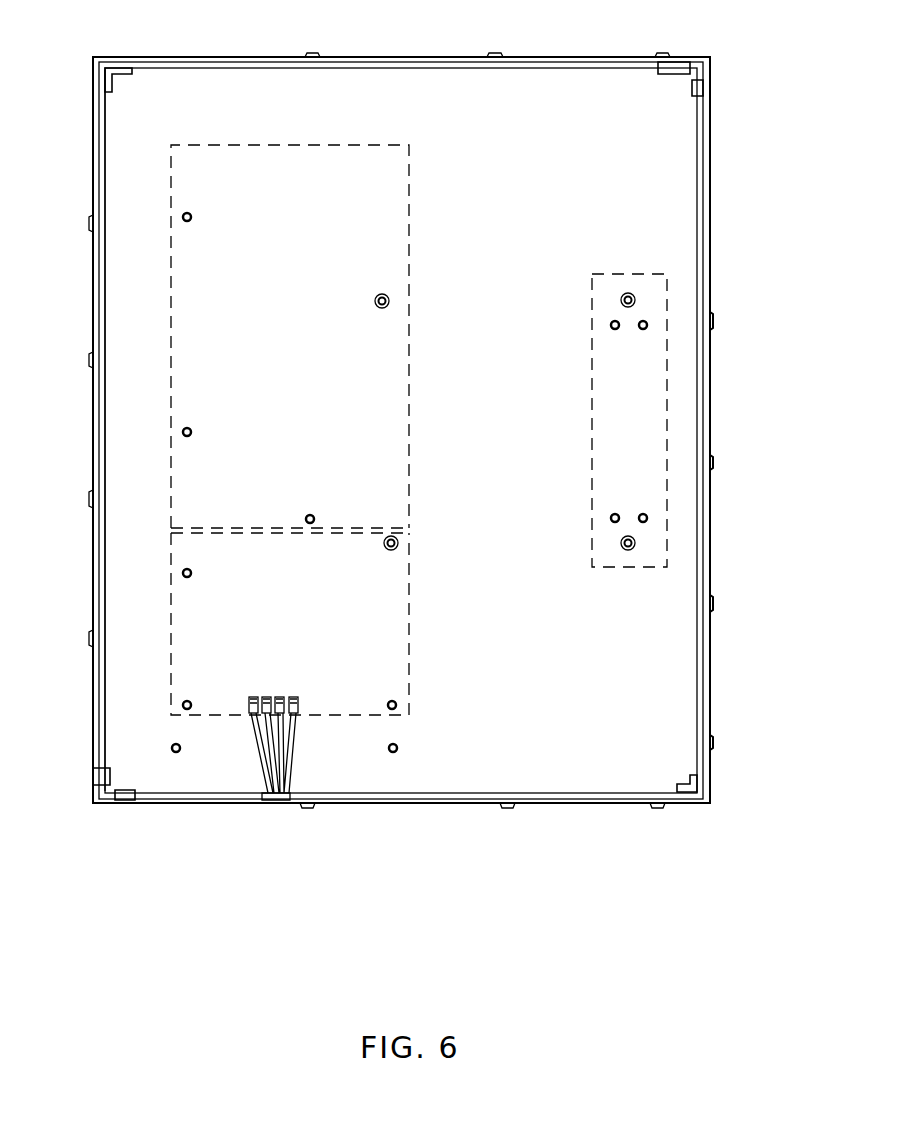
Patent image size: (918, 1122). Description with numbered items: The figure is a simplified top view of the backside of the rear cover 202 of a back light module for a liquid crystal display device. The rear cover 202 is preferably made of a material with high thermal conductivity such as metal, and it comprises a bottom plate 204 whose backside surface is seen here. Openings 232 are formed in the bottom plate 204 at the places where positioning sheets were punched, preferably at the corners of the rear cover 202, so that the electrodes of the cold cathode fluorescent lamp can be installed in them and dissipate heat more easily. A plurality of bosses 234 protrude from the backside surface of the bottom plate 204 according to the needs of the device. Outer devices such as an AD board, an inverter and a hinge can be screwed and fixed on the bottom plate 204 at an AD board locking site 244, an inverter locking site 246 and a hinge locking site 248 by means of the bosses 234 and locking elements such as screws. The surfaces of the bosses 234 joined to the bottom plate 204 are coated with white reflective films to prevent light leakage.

The rear cover 202 is at (382, 84).
The bottom plate 204 is at (685, 233).
The openings 232 is at (122, 68).
The bosses 234 is at (400, 540).
The AD board locking site 244 is at (190, 323).
The inverter locking site 246 is at (190, 602).
The hinge locking site 248 is at (648, 421).